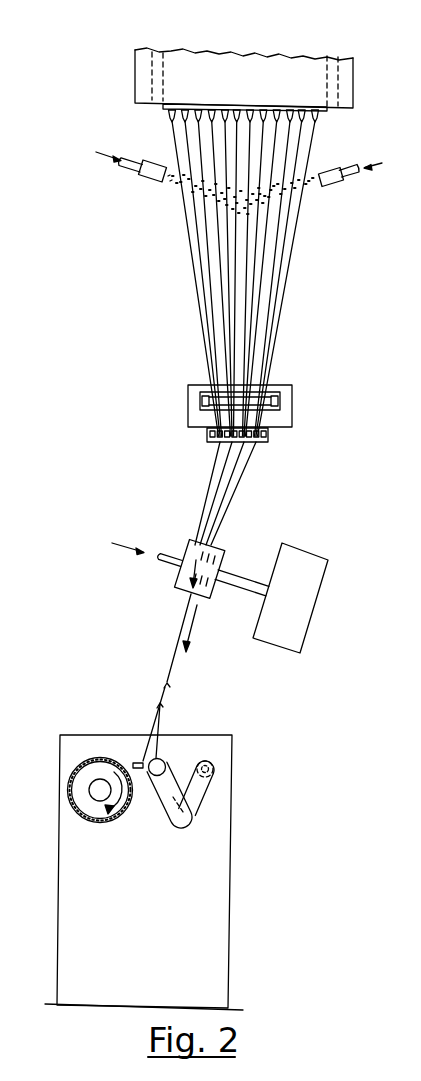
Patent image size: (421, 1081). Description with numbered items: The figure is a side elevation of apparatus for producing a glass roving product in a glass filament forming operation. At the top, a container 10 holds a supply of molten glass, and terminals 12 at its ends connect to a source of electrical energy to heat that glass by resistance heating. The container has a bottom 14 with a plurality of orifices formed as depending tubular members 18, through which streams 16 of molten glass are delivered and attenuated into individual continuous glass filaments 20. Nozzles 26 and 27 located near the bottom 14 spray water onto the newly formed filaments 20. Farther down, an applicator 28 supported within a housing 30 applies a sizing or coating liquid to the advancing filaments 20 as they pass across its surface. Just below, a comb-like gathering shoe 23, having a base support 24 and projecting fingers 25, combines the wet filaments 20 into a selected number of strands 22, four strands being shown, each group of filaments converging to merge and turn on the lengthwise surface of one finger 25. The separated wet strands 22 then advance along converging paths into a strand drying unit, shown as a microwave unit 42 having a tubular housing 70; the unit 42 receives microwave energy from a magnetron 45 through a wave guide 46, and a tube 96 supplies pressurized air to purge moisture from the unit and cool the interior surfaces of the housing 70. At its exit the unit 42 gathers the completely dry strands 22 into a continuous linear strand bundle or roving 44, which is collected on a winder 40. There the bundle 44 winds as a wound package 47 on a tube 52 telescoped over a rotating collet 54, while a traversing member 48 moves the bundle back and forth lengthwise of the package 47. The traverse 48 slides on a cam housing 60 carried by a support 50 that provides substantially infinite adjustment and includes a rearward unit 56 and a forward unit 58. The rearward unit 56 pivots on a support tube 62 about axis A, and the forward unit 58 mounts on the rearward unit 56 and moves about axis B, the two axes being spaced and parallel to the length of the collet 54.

The container 10 is at (200, 44).
The terminals 12 is at (150, 58).
The bottom 14 is at (322, 109).
The streams 16 is at (300, 124).
The tubular members 18 is at (318, 117).
The continuous glass filaments 20 is at (255, 261).
The strands 22 is at (228, 470).
The gathering shoe 23 is at (258, 446).
The base support 24 is at (270, 440).
The fingers 25 is at (270, 433).
The nozzle 26 is at (152, 182).
The nozzle 27 is at (330, 186).
The applicator 28 is at (270, 400).
The housing 30 is at (293, 402).
The winder 40 is at (97, 732).
The microwave unit 42 is at (187, 538).
The strand bundle 44 is at (161, 703).
The magnetron 45 is at (307, 626).
The wave guide 46 is at (232, 589).
The wound package 47 is at (82, 820).
The traversing member 48 is at (145, 760).
The support 50 is at (181, 828).
The tube 52 is at (71, 798).
The collet 54 is at (80, 777).
The rearward unit 56 is at (202, 797).
The forward unit 58 is at (160, 805).
The cam housing 60 is at (160, 758).
The support tube 62 is at (216, 769).
The tubular housing 70 is at (218, 558).
The tube 96 is at (163, 565).
The axis A is at (214, 761).
The axis B is at (193, 824).